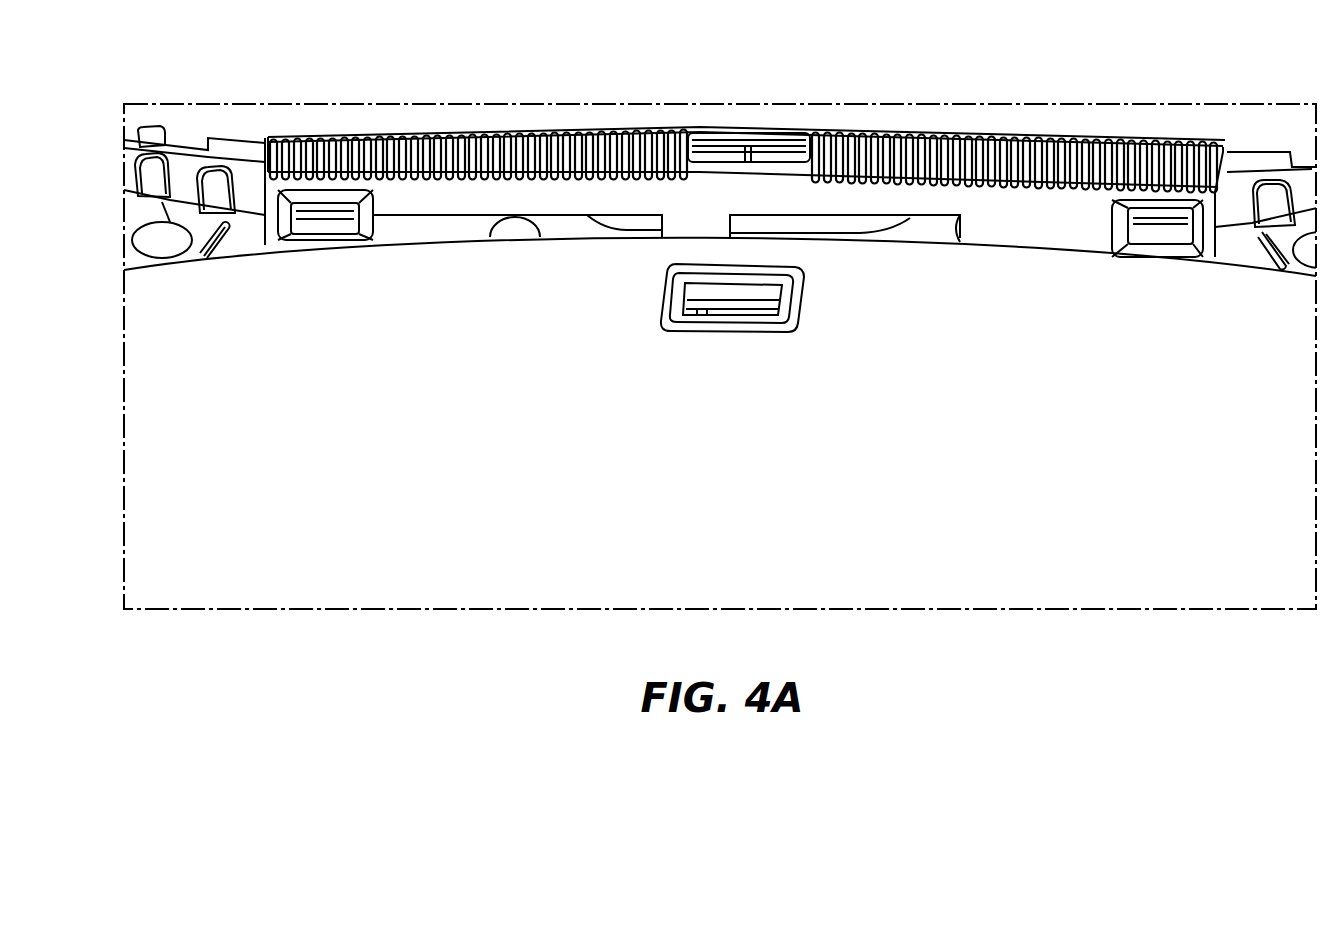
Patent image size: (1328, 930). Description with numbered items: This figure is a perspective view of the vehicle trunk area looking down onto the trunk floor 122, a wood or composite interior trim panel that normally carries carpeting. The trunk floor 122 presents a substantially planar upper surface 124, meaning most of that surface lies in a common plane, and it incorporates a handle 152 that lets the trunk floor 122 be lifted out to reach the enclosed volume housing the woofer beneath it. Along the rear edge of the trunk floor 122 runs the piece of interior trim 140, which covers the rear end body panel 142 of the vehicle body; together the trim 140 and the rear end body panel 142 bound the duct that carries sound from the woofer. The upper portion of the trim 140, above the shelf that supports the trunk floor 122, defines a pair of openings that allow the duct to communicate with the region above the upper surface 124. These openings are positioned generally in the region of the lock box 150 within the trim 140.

The trunk floor 122 is at (195, 358).
The upper surface 124 is at (885, 481).
The interior trim 140 is at (470, 137).
The rear end body panel 142 is at (228, 140).
The lock box 150 is at (740, 132).
The handle 152 is at (724, 292).